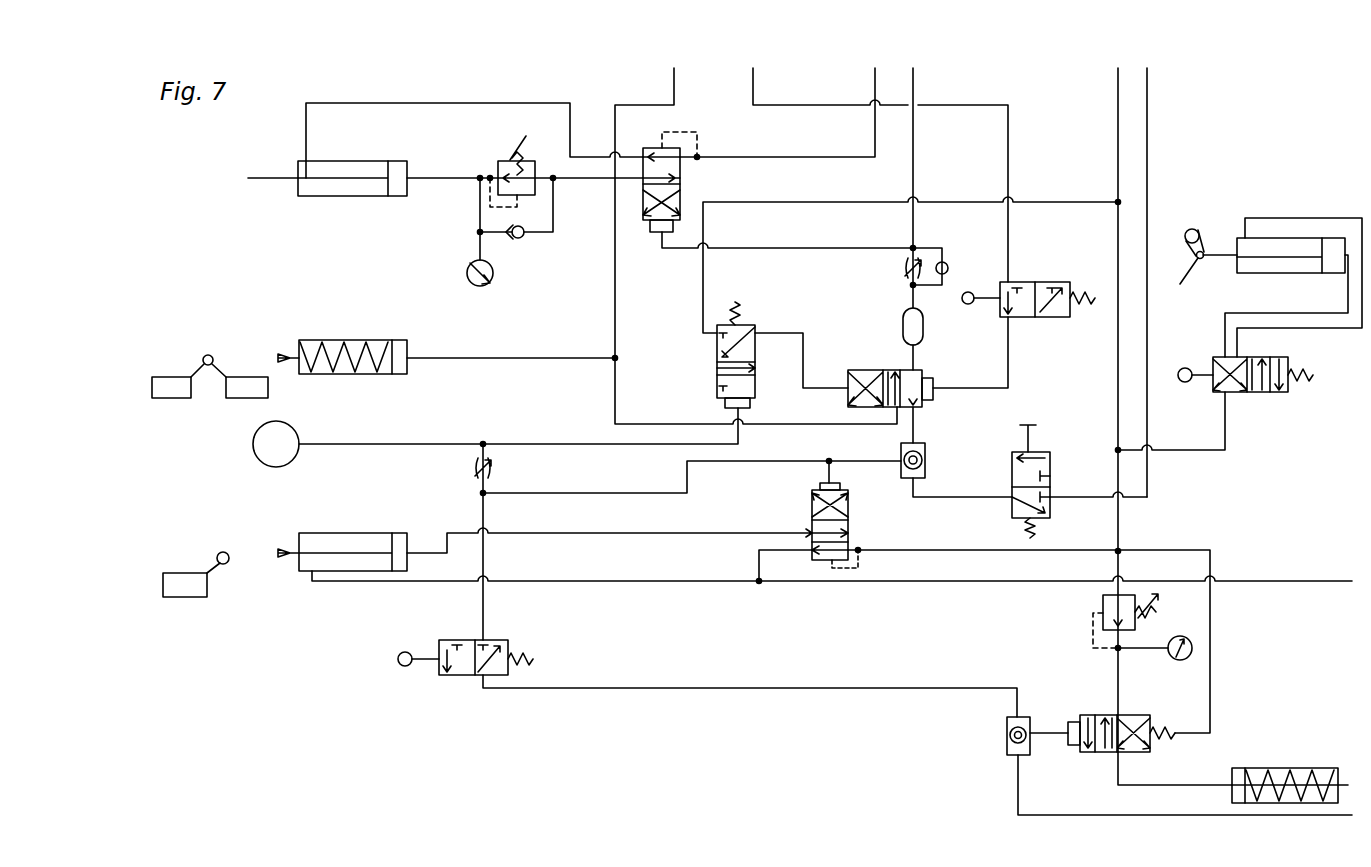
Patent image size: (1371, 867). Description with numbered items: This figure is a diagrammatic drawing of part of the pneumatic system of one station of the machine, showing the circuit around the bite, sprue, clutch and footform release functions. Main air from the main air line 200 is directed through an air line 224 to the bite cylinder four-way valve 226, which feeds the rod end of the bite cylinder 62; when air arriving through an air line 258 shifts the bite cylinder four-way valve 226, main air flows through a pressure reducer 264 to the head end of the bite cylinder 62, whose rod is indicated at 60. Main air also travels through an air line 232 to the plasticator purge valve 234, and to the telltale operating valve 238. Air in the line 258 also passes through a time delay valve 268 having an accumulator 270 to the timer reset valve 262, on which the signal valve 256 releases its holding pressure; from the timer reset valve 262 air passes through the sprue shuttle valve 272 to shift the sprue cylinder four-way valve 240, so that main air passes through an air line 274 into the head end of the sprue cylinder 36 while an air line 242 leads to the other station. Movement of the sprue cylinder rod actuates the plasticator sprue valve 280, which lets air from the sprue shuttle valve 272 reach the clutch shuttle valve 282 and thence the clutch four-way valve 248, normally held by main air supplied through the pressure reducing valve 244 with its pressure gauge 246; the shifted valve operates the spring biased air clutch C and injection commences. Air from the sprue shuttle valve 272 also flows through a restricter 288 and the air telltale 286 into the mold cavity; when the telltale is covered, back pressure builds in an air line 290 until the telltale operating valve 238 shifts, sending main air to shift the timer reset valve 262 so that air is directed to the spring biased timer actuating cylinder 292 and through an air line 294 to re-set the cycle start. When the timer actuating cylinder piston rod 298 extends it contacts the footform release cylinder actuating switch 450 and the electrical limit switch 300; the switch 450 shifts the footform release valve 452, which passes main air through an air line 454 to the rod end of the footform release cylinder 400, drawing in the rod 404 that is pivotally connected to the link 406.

The piston rod 60 is at (268, 176).
The bite cylinder 62 is at (367, 197).
The pressure reducer 264 is at (498, 175).
The air line 294 is at (674, 74).
The air line 224 is at (875, 86).
The air line 258 is at (913, 90).
The bite cylinder four-way valve 226 is at (680, 167).
The main air line 200 is at (1118, 140).
The air line 232 is at (1148, 105).
The rod 404 is at (1218, 250).
The link 406 is at (1198, 285).
The footform release cylinder 400 is at (1296, 275).
The time delay valve 268 is at (904, 266).
The accumulator 270 is at (903, 328).
The signal valve 256 is at (1028, 320).
The telltale operating valve 238 is at (780, 307).
The timer reset valve 262 is at (848, 406).
The sprue shuttle valve 272 is at (926, 472).
The plasticator purge valve 234 is at (1050, 478).
The footform release valve 452 is at (1290, 362).
The air line 454 is at (1225, 430).
The timer actuating cylinder piston rod 298 is at (292, 355).
The timer actuating cylinder 292 is at (380, 340).
The footform release cylinder actuating switch 450 is at (262, 398).
The electrical limit switch 300 is at (175, 399).
The air telltale 286 is at (298, 430).
The air line 290 is at (528, 443).
The restricter 288 is at (474, 467).
The sprue cylinder 36 is at (332, 534).
The plasticator sprue valve 280 is at (180, 598).
The sprue cylinder four-way valve 240 is at (848, 516).
The air line 274 is at (918, 556).
The air line 242 is at (818, 583).
The pressure reducing valve 244 is at (1108, 594).
The pressure gauge 246 is at (1170, 658).
The clutch four-way valve 248 is at (1145, 720).
The clutch shuttle valve 282 is at (1007, 722).
The air clutch C is at (1275, 770).